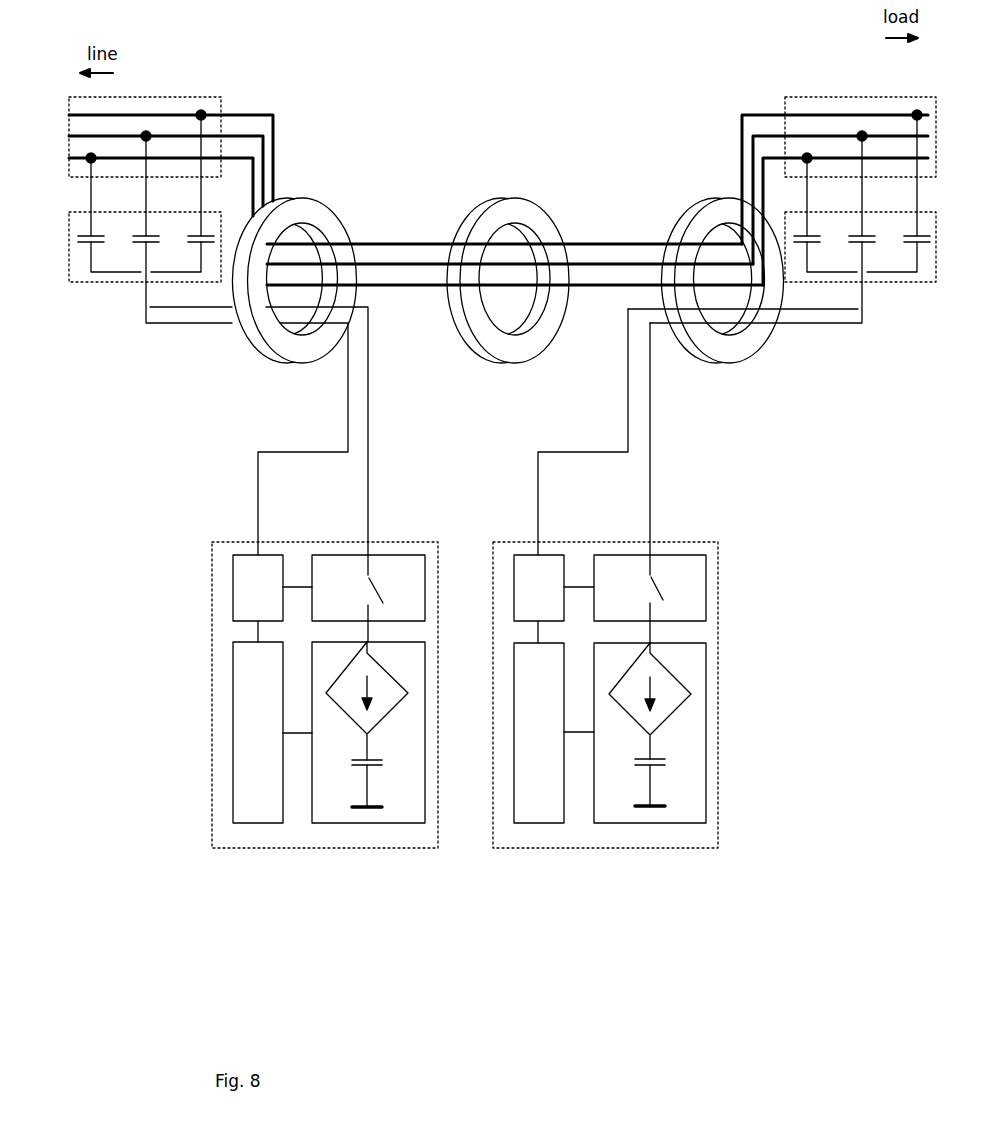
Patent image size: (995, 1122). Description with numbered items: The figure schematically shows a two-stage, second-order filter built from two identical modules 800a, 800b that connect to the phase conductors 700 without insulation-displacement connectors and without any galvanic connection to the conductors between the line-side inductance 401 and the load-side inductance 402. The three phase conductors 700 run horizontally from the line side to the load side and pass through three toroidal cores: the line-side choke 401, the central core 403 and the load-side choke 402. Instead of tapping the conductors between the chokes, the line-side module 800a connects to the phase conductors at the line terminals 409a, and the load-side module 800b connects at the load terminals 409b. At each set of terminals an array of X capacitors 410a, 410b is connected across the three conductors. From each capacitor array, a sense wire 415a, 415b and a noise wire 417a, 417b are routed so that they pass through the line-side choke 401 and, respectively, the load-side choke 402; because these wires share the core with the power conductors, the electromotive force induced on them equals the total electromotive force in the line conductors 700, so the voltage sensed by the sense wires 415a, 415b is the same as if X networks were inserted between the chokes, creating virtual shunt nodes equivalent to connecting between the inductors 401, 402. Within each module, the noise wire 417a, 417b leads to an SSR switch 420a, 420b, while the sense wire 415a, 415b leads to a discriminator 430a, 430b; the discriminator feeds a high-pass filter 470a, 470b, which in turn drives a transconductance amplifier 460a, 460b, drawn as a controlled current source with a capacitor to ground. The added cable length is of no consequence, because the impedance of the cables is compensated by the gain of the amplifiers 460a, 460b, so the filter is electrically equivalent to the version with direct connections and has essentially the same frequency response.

The line terminals 409a is at (218, 100).
The load terminals 409b is at (820, 108).
The phase conductors 700 is at (370, 242).
The line-side inductance 401 is at (303, 213).
The central core 403 is at (518, 215).
The load-side inductance 402 is at (722, 215).
The array of X capacitors 410a is at (134, 284).
The array of X capacitors 410b is at (872, 284).
The sense wire 415a is at (352, 377).
The noise wire 417a is at (368, 375).
The sense wire 415b is at (628, 357).
The noise wire 417b is at (648, 355).
The SSR switch 420a is at (397, 572).
The SSR switch 420b is at (695, 562).
The discriminator 430a is at (242, 583).
The discriminator 430b is at (523, 590).
The high-pass filter 470a is at (242, 745).
The high-pass filter 470b is at (545, 815).
The transconductance amplifier 460a is at (330, 808).
The transconductance amplifier 460b is at (698, 788).
The line-side module 800a is at (305, 709).
The load-side module 800b is at (614, 704).